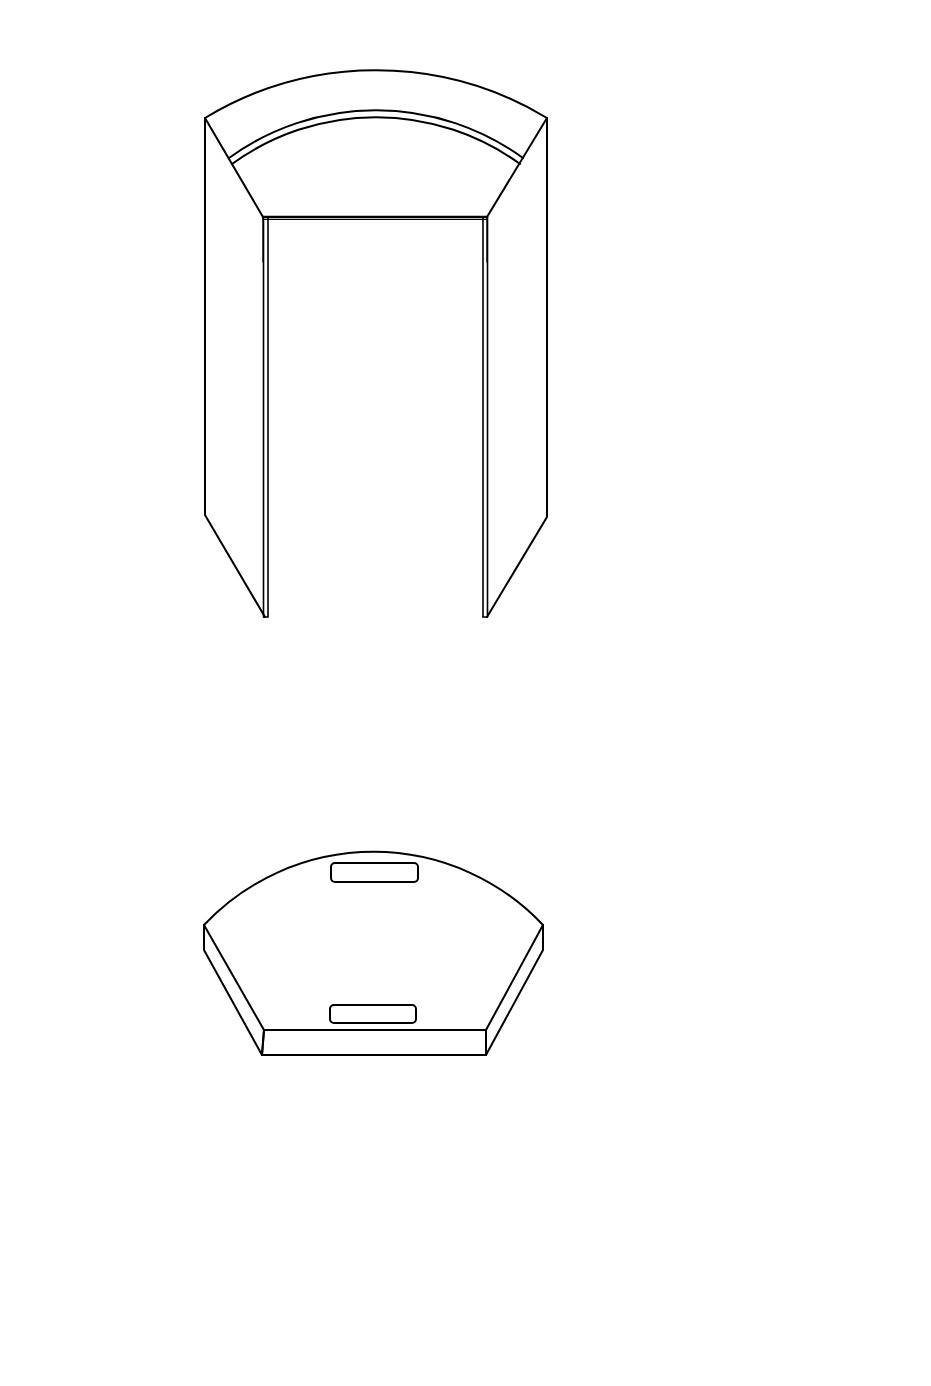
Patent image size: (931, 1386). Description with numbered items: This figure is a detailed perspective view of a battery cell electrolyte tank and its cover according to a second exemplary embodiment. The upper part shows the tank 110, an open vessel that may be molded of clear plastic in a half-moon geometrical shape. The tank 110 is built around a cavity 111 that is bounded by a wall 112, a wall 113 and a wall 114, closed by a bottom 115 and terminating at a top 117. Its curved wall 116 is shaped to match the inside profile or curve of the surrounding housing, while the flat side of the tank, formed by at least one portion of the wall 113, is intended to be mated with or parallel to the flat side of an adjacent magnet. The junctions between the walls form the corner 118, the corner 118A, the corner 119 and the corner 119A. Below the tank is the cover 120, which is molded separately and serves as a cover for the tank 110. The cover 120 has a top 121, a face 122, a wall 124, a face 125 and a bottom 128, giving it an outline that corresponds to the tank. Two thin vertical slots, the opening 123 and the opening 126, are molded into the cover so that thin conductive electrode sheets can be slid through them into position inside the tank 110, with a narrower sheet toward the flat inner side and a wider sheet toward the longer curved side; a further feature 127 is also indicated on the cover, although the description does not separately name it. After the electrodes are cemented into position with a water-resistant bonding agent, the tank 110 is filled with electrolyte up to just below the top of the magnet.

The tank 110 is at (645, 574).
The cavity 111 is at (283, 178).
The wall 112 is at (265, 493).
The wall 113 is at (348, 355).
The wall 114 is at (490, 412).
The bottom 115 is at (395, 559).
The curved wall 116 is at (332, 70).
The top 117 is at (442, 123).
The corner 118 is at (548, 133).
The corner 118A is at (488, 217).
The corner 119 is at (233, 157).
The corner 119A is at (263, 217).
The cover 120 is at (620, 840).
The top 121 is at (487, 935).
The face 122 is at (233, 987).
The opening 123 is at (382, 873).
The wall 124 is at (520, 980).
The face 125 is at (308, 1040).
The opening 126 is at (365, 1010).
The arcuate rear edge 127 is at (233, 885).
The bottom 128 is at (438, 1053).